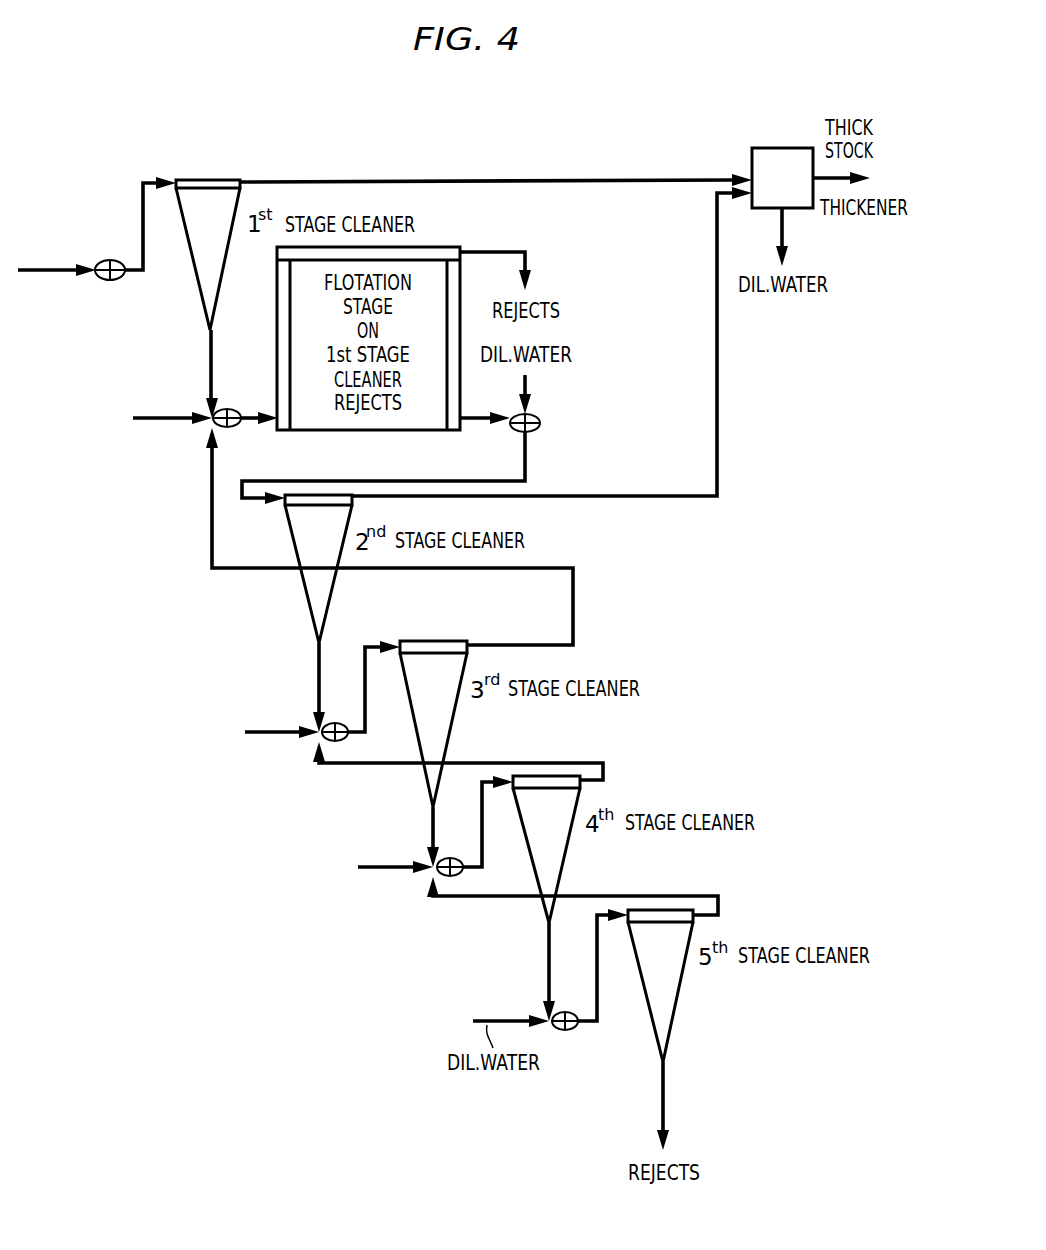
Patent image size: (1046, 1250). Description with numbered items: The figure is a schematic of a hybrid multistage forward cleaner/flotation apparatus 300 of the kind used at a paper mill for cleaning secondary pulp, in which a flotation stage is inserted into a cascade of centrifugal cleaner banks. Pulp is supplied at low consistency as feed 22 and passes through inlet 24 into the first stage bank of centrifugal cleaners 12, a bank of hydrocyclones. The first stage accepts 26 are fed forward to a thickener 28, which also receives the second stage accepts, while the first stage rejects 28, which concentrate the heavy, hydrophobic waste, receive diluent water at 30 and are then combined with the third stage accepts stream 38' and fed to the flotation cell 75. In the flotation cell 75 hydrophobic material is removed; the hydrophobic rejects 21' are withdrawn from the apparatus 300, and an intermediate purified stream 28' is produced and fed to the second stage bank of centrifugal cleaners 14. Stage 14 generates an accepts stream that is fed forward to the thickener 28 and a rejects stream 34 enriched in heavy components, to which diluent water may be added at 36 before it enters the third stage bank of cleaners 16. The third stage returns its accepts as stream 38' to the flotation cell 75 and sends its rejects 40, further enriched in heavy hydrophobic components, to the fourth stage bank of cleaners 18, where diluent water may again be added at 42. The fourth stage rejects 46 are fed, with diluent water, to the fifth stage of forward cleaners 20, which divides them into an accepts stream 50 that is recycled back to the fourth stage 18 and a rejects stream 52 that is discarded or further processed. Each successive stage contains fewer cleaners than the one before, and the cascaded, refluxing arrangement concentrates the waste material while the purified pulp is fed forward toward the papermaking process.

The first stage bank of centrifugal cleaners 12 is at (222, 222).
The second stage bank of centrifugal cleaners 14 is at (333, 539).
The third stage bank of centrifugal cleaners 16 is at (446, 687).
The fourth stage bank of centrifugal cleaners 18 is at (561, 821).
The fifth stage bank of forward cleaners 20 is at (674, 954).
The pulp feed 22 is at (33, 272).
The inlet 24 is at (143, 213).
The first stage accepts stream 26 is at (298, 182).
The first stage rejects stream / thickener 28 is at (515, 260).
The intermediate purified stream 28' is at (383, 458).
The diluent water addition 30 is at (148, 420).
The flotation stage hydrophobic rejects 21' is at (495, 242).
The flotation cell 75 is at (437, 247).
The second stage rejects stream 34 is at (318, 672).
The diluent water addition 36 is at (259, 735).
The third stage accepts stream 38' is at (420, 536).
The third stage rejects stream 40 is at (432, 818).
The diluent water addition 42 is at (373, 870).
The fourth stage rejects stream 46 is at (547, 978).
The fifth stage accepts stream 50 is at (655, 896).
The fifth stage rejects stream 52 is at (667, 1105).
The hybrid multistage forward cleaner/flotation apparatus 300 is at (717, 535).